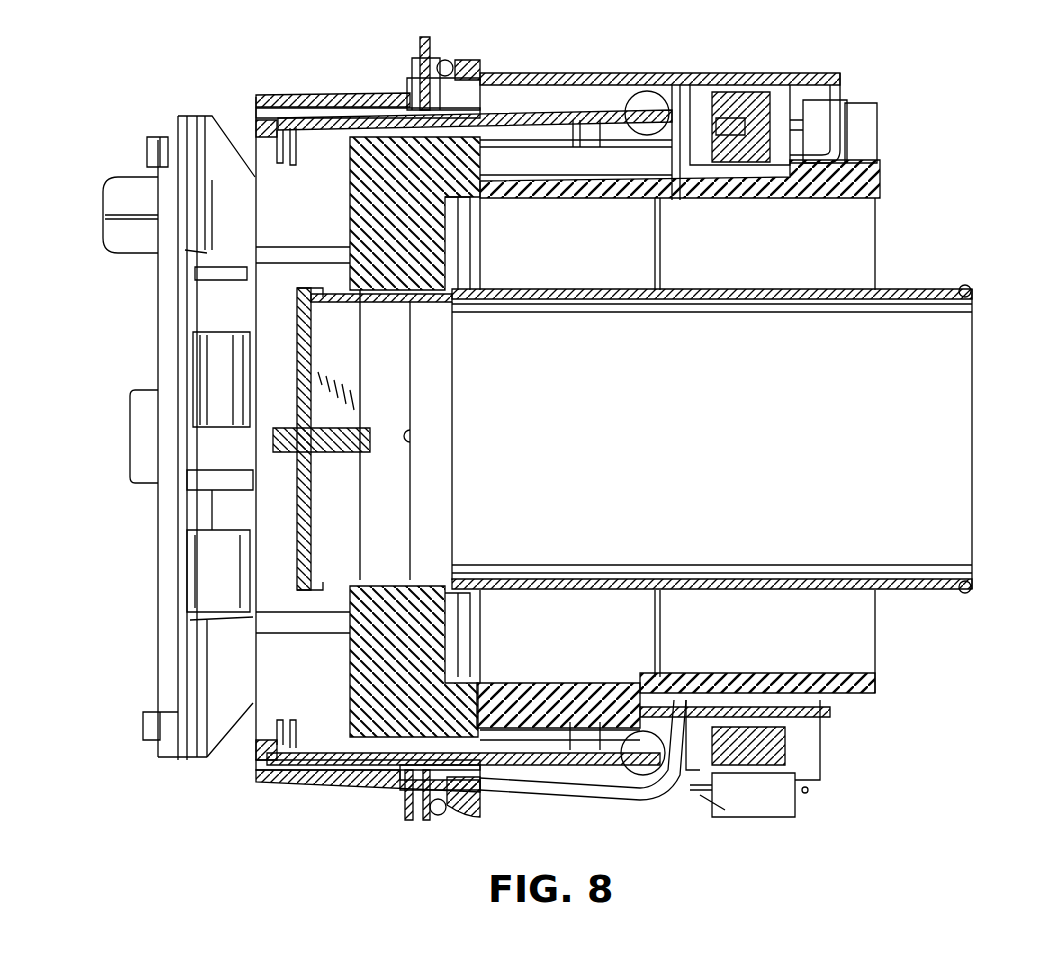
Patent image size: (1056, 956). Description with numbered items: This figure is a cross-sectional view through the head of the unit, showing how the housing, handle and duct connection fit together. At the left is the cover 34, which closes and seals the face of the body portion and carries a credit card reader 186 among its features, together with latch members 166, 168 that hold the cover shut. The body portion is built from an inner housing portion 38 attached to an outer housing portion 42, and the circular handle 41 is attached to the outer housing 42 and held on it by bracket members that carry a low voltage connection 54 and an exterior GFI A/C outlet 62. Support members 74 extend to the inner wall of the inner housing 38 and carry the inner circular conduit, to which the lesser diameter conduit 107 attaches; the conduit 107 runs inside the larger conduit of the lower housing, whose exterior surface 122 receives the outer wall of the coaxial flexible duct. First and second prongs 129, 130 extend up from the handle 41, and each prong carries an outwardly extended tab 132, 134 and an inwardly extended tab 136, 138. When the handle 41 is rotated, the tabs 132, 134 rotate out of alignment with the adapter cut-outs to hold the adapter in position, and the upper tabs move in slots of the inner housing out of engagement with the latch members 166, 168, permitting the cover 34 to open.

The cover 34 is at (198, 114).
The inner housing portion 38 is at (322, 88).
The circular handle 41 is at (598, 96).
The outer housing portion 42 is at (660, 72).
The low voltage connection 54 is at (878, 128).
The exterior GFI A/C outlet 62 is at (775, 806).
The support members 74 is at (348, 243).
The lesser diameter conduit 107 is at (578, 453).
The exterior surface 122 is at (700, 266).
The first prong 129 is at (372, 105).
The second prong 130 is at (338, 782).
The outwardly extended tab 132 is at (416, 78).
The outwardly extended tab 134 is at (402, 788).
The inwardly extended tab 136 is at (285, 164).
The inwardly extended tab 138 is at (283, 725).
The latch member 166 is at (147, 150).
The latch member 168 is at (143, 722).
The credit card reader 186 is at (105, 196).